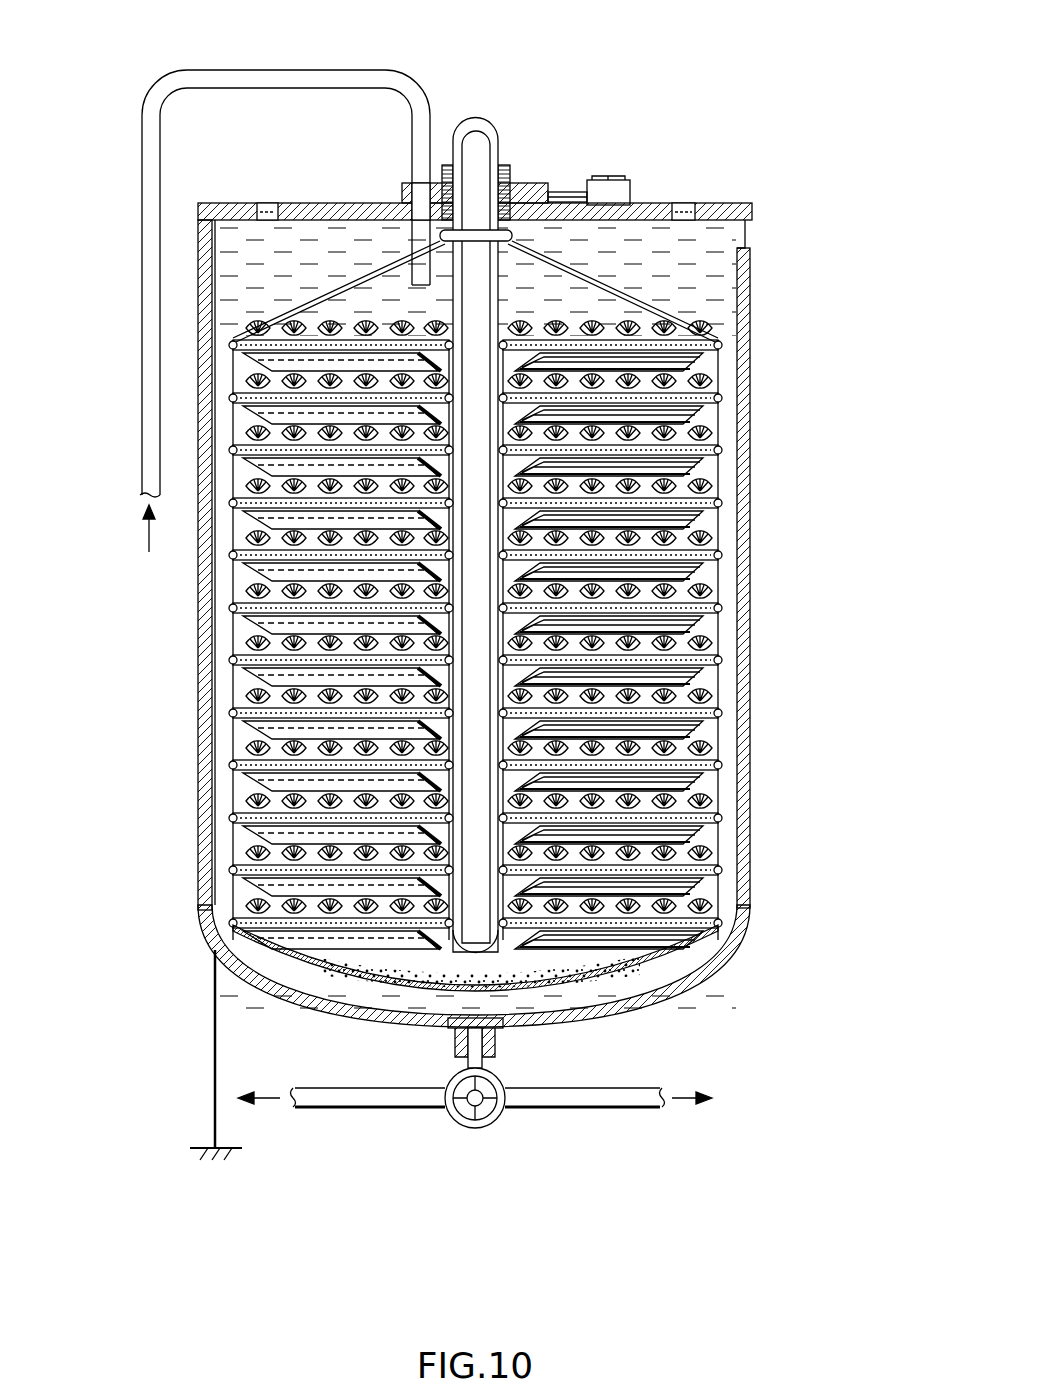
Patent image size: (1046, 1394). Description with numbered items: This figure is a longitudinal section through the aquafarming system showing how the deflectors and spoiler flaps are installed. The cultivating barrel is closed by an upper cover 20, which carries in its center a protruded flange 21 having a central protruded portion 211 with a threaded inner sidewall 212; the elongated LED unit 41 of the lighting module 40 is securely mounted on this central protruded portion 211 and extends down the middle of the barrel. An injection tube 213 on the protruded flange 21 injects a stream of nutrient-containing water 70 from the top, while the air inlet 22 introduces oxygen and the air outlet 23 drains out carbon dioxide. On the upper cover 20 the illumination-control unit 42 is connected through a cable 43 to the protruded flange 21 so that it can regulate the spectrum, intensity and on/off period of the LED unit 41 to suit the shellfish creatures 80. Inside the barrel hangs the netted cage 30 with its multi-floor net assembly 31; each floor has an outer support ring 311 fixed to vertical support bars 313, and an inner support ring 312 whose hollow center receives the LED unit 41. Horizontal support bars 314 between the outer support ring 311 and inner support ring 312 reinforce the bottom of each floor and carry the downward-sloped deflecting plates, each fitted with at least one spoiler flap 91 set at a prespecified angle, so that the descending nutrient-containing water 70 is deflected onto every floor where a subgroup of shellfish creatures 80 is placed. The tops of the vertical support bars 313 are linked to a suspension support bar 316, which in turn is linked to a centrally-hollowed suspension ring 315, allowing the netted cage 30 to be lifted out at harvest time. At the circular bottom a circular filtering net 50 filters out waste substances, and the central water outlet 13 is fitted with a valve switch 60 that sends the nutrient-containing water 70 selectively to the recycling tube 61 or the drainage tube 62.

The water outlet 13 is at (466, 1042).
The upper cover 20 is at (740, 208).
The protruded flange 21 is at (475, 110).
The central protruded portion 211 is at (436, 168).
The threaded inner sidewall 212 is at (446, 165).
The injection tube 213 is at (165, 92).
The air inlet 22 is at (683, 203).
The air outlet 23 is at (267, 203).
The netted cage 30 is at (471, 547).
The multi-floor net assembly 31 is at (471, 547).
The outer support ring 311 is at (722, 342).
The inner support ring 312 is at (250, 578).
The vertical support bar 313 is at (235, 684).
The horizontal support bar 314 is at (680, 516).
The suspension ring 315 is at (445, 235).
The suspension support bar 316 is at (650, 300).
The lighting module 40 is at (557, 484).
The LED unit 41 is at (490, 124).
The illumination-control unit 42 is at (605, 180).
The cable 43 is at (568, 192).
The circular filtering net 50 is at (535, 985).
The valve switch 60 is at (480, 1126).
The recycling tube 61 is at (328, 1102).
The drainage tube 62 is at (624, 1104).
The nutrient-containing water 70 is at (300, 975).
The shellfish creatures 80 is at (232, 800).
The spoiler flap 91 is at (670, 466).